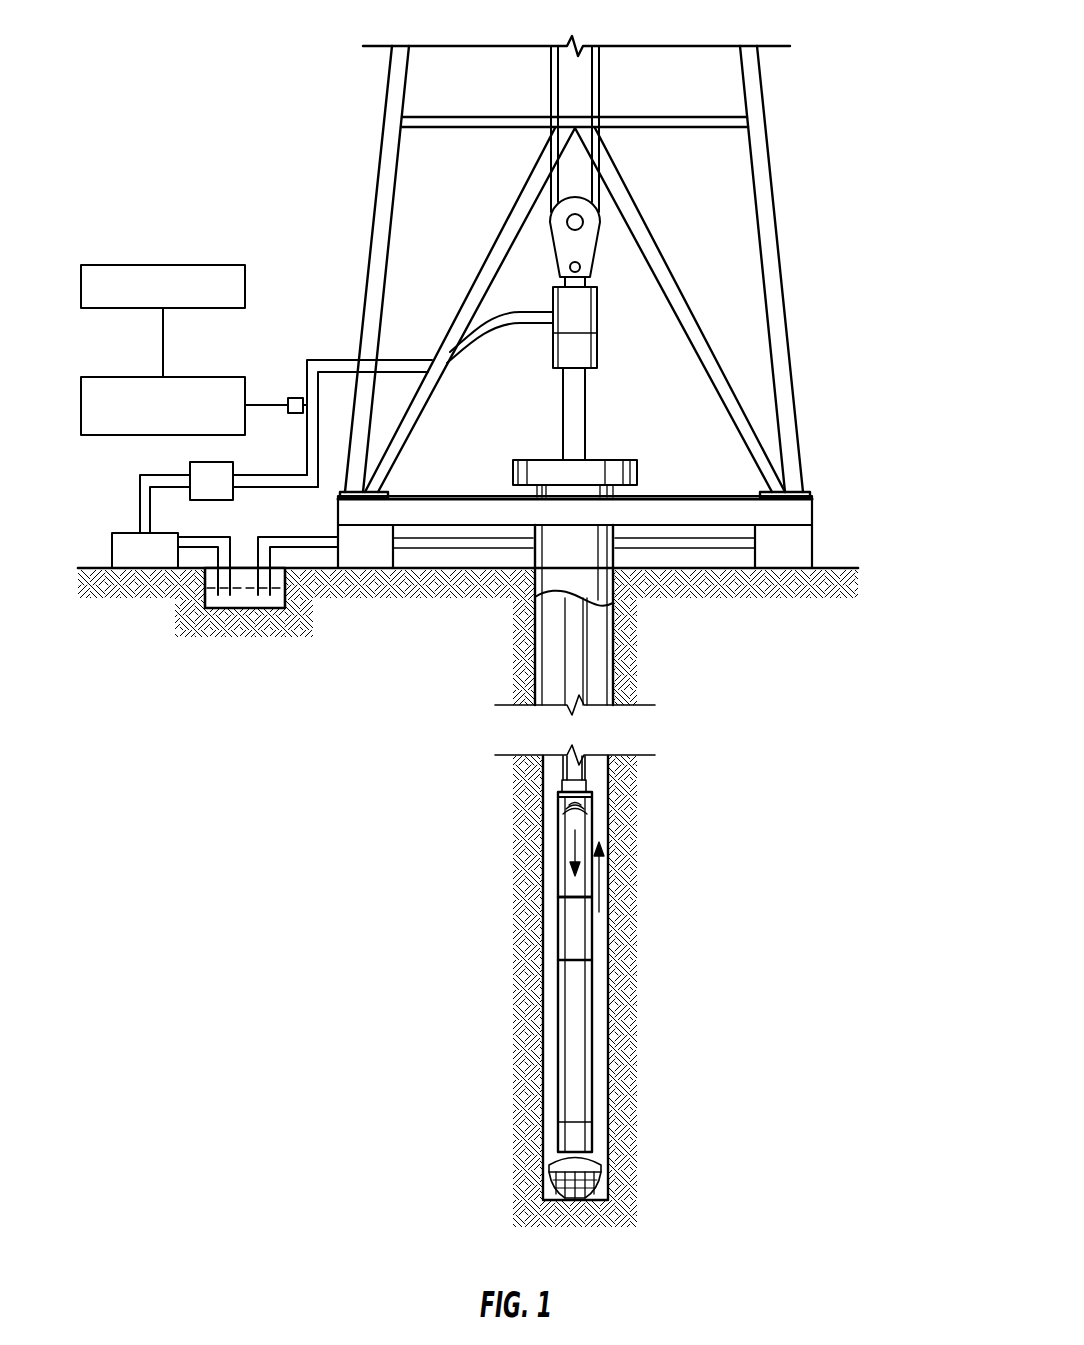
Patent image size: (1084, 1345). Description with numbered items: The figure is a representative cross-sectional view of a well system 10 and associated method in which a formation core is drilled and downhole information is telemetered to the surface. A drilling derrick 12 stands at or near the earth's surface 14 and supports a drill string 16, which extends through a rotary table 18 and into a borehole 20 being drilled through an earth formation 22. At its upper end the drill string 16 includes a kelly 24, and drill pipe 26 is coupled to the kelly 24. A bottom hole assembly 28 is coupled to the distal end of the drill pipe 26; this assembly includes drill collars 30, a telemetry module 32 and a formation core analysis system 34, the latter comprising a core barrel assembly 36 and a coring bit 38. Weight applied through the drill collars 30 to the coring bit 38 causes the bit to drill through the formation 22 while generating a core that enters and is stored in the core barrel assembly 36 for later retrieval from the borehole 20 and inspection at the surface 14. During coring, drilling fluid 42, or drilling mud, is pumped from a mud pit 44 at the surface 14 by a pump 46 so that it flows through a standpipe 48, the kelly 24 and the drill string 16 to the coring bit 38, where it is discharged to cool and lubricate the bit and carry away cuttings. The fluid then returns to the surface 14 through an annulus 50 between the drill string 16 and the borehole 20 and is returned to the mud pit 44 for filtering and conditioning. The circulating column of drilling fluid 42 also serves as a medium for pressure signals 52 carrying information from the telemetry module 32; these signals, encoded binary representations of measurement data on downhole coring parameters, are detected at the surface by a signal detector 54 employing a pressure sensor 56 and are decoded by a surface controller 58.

The well system 10 is at (236, 78).
The drilling derrick 12 is at (775, 222).
The earth's surface 14 is at (843, 567).
The drill string 16 is at (592, 641).
The rotary table 18 is at (612, 460).
The borehole 20 is at (614, 672).
The earth formation 22 is at (418, 1056).
The kelly 24 is at (597, 303).
The drill pipe 26 is at (562, 778).
The bottom hole assembly 28 is at (599, 941).
The drill collars 30 is at (593, 825).
The telemetry module 32 is at (595, 957).
The formation core analysis system 34 is at (600, 1001).
The core barrel assembly 36 is at (557, 1098).
The coring bit 38 is at (594, 1142).
The drilling fluid 42 is at (574, 848).
The mud pit 44 is at (233, 608).
The pump 46 is at (120, 533).
The standpipe 48 is at (485, 341).
The annulus 50 is at (600, 1072).
The pressure signals 52 is at (566, 816).
The signal detector 54 is at (113, 377).
The pressure sensor 56 is at (293, 398).
The surface controller 58 is at (118, 265).